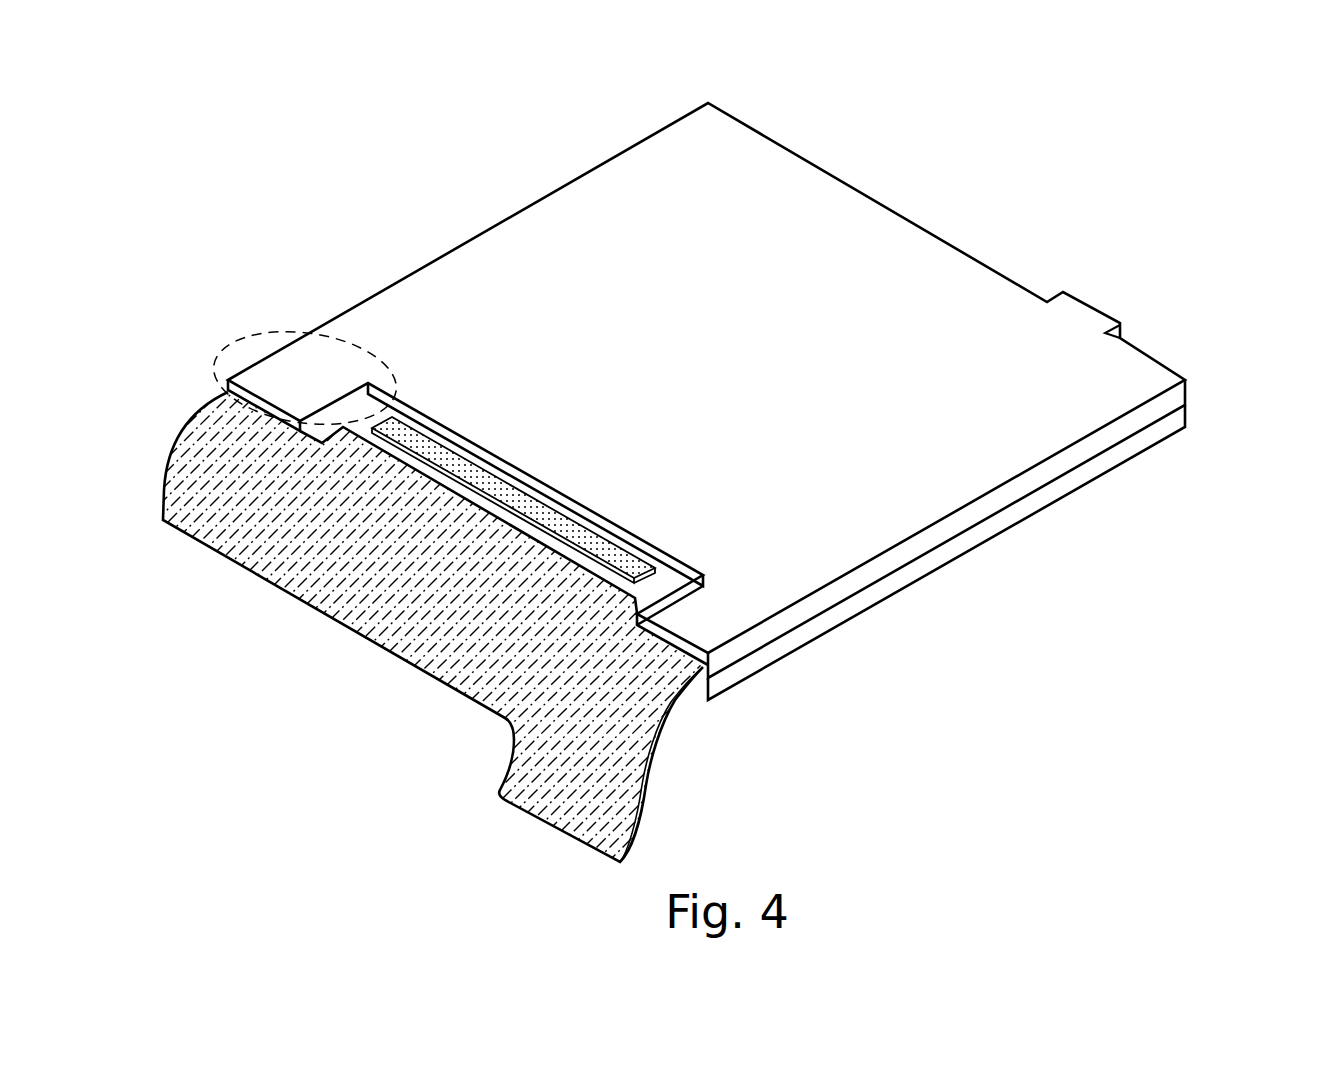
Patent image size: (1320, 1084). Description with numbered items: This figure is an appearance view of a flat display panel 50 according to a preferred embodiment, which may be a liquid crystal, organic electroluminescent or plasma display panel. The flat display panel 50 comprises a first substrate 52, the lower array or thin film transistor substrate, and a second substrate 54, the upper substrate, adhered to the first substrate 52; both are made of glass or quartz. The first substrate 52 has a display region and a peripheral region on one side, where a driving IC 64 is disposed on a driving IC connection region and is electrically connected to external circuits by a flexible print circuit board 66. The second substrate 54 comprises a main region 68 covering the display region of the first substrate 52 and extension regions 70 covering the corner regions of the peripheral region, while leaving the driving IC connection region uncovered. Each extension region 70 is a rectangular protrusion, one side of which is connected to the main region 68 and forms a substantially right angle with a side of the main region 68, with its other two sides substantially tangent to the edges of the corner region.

The flat display panel 50 is at (756, 401).
The first substrate 52 is at (1180, 395).
The second substrate 54 is at (1160, 432).
The driving IC 64 is at (400, 405).
The flexible print circuit board 66 is at (203, 460).
The main region 68 is at (565, 258).
The extension region 70 is at (262, 333).